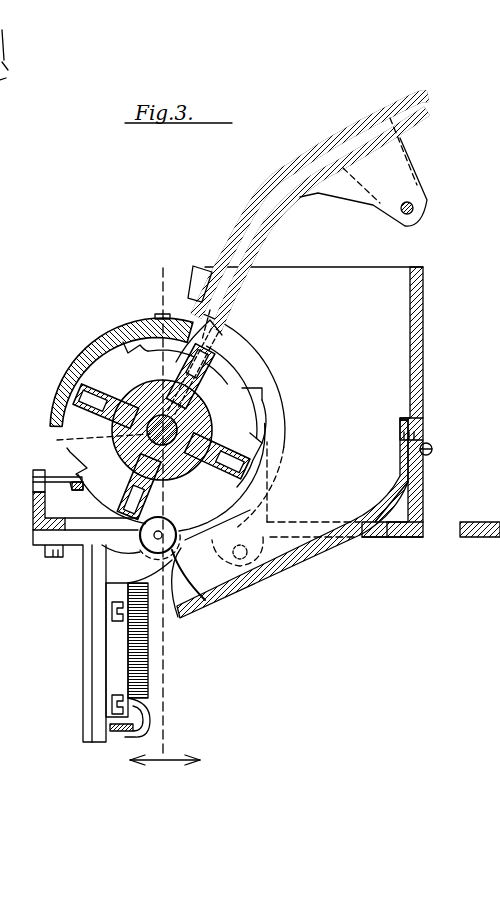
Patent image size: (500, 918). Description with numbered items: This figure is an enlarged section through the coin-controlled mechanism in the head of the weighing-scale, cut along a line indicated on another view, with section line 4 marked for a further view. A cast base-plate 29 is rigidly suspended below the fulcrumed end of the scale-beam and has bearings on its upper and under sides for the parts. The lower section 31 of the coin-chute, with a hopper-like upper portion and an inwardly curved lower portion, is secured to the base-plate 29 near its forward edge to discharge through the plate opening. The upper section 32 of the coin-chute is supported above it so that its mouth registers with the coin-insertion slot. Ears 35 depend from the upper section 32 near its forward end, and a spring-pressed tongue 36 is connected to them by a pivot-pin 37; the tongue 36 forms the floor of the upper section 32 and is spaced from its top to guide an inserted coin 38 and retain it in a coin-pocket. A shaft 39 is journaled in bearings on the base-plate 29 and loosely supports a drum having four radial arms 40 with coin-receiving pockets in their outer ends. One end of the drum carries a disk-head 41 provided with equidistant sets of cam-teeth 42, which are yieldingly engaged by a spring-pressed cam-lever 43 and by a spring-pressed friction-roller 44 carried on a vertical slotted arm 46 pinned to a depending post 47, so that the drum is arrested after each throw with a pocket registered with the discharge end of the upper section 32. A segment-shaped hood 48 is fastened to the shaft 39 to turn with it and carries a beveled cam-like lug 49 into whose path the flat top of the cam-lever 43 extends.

The section line 4 is at (165, 775).
The base-plate 29 is at (395, 538).
The lower section of coin-chute 31 is at (350, 266).
The upper section of coin-chute 32 is at (262, 200).
The ears 35 is at (402, 165).
The spring-pressed tongue 36 is at (265, 228).
The pivot-pin 37 is at (414, 206).
The coin 38 is at (232, 330).
The shaft 39 is at (117, 430).
The radial arms 40 is at (161, 422).
The disk-head 41 is at (235, 380).
The cam-teeth 42 is at (123, 336).
The spring-pressed cam-lever 43 is at (263, 432).
The spring-pressed friction-roller 44 is at (173, 537).
The vertical slotted arm 46 is at (102, 648).
The post 47 is at (92, 608).
The segment-shaped hood 48 is at (98, 338).
The beveled cam-like lug 49 is at (172, 318).